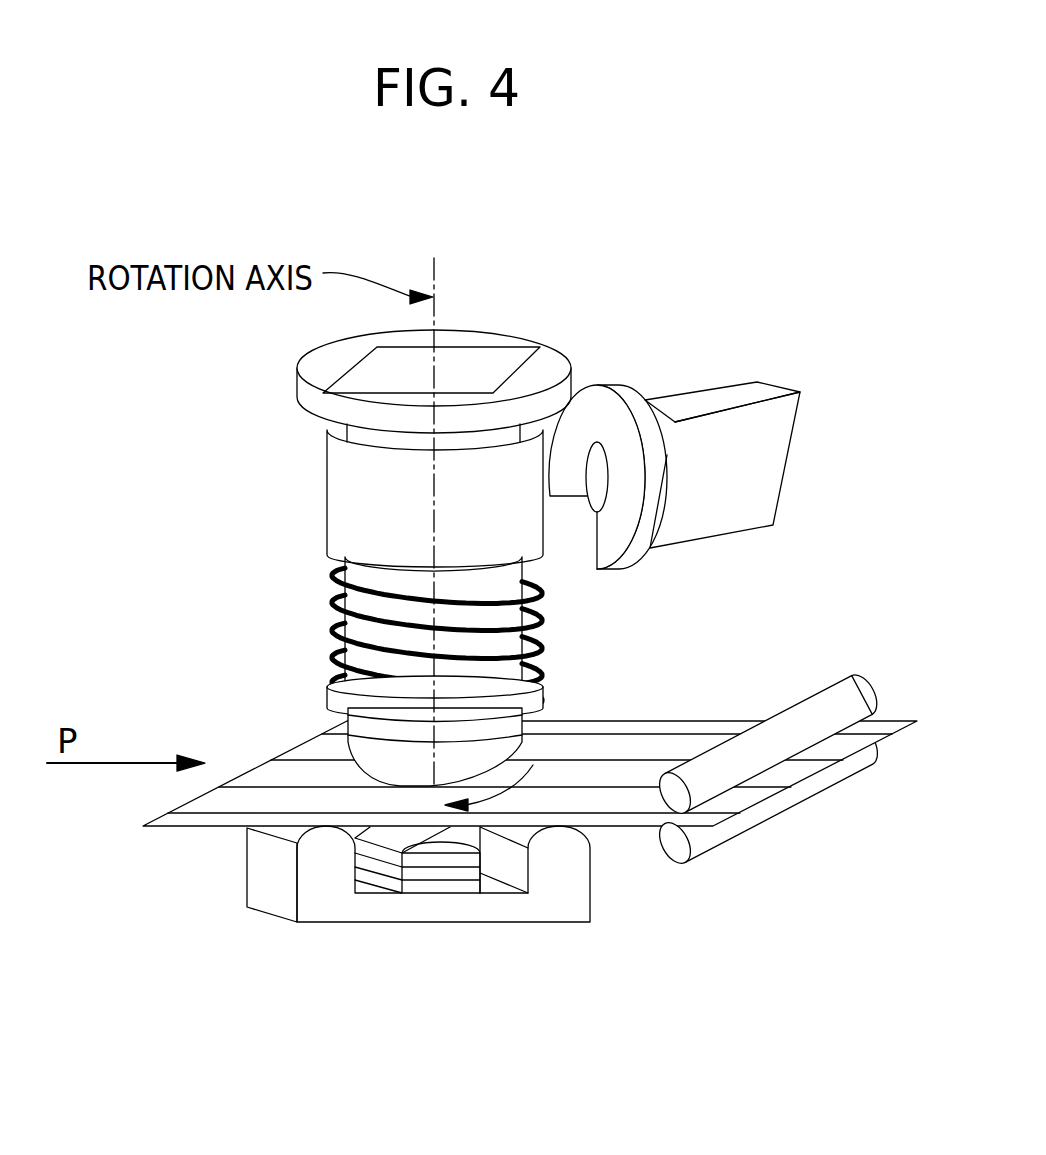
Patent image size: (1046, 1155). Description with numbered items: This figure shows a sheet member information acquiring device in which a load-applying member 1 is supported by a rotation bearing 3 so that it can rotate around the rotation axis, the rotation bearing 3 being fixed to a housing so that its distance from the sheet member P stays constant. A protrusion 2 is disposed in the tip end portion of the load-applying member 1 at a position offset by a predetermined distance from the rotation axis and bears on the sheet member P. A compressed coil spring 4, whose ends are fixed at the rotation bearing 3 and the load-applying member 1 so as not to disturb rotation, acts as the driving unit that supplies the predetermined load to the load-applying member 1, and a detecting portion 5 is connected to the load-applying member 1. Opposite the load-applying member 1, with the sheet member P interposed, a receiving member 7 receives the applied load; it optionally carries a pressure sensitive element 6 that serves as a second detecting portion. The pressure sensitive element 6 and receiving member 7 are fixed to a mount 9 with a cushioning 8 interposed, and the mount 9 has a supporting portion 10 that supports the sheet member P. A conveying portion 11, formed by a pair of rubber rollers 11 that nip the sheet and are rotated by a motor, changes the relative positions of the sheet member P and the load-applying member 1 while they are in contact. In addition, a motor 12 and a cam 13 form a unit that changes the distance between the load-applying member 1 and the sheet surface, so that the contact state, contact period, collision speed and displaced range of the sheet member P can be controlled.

The load-applying member 1 is at (508, 575).
The protrusion 2 is at (350, 745).
The rotation bearing 3 is at (357, 503).
The coil spring 4 is at (533, 637).
The detecting portion 5 is at (477, 358).
The pressure sensitive element 6 is at (423, 872).
The receiving member 7 is at (380, 838).
The cushioning 8 is at (457, 887).
The mount 9 is at (570, 897).
The supporting portion 10 is at (560, 827).
The conveying portion 11 is at (853, 697).
The motor 12 is at (763, 453).
The cam 13 is at (632, 400).